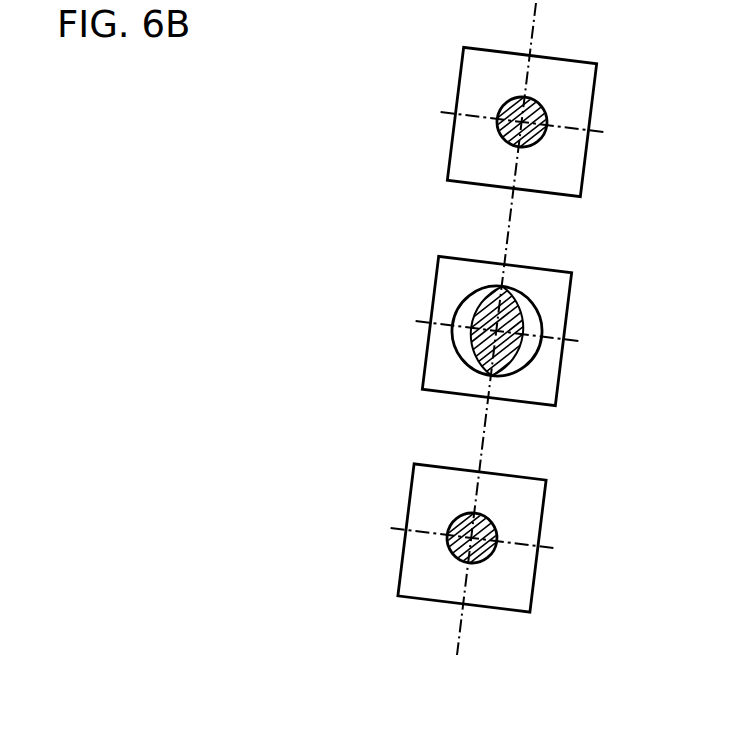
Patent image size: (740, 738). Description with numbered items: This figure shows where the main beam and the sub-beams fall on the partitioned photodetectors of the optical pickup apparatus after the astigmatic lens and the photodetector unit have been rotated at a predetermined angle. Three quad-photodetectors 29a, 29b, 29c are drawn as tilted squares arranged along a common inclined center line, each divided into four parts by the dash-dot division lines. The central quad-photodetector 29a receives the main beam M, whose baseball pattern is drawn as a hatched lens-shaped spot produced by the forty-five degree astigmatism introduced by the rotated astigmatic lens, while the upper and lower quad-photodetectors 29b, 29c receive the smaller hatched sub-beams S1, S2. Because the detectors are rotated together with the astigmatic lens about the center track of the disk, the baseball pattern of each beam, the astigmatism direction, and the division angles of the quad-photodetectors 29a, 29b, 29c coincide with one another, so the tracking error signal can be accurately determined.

The quad-photodetector 29a is at (560, 375).
The quad-photodetector 29b is at (583, 165).
The quad-photodetector 29c is at (535, 583).
The main beam M is at (523, 302).
The sub-beam S1 is at (541, 105).
The sub-beam S2 is at (489, 521).